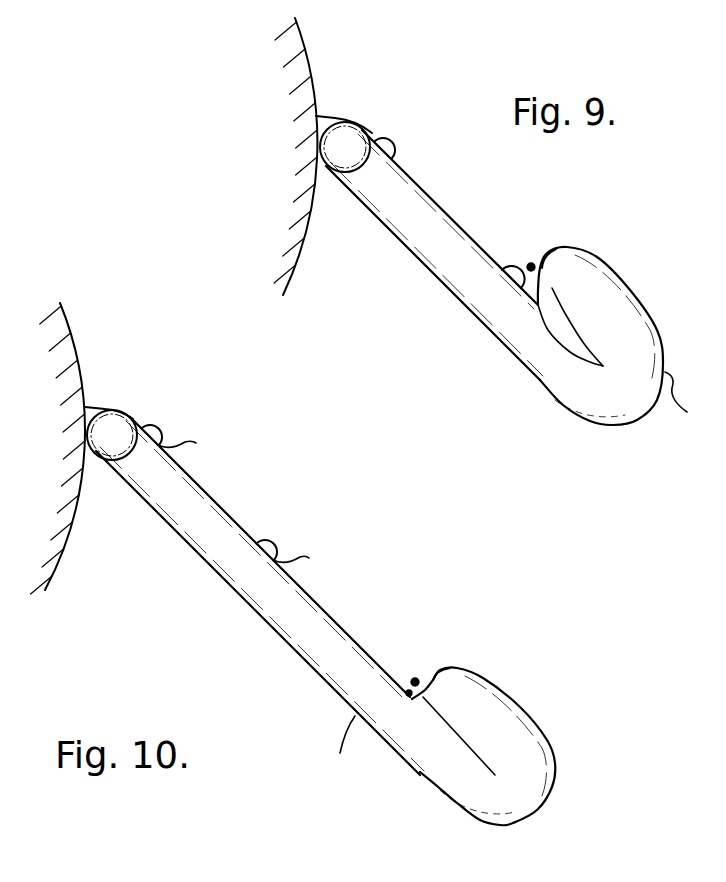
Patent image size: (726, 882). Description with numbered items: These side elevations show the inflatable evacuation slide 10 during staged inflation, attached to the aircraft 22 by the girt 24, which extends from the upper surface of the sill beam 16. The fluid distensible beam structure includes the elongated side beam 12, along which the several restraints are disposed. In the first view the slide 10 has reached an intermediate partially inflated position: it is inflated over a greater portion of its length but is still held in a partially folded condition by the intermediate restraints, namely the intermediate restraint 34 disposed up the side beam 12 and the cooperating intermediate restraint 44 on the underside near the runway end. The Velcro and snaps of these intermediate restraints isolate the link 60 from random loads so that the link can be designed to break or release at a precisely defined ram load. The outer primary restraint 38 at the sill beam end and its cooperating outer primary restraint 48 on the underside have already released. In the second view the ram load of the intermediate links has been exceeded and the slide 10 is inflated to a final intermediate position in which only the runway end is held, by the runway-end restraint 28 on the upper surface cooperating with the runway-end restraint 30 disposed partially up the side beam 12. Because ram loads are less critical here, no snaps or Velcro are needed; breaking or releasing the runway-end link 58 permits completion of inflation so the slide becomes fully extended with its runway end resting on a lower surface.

In FIG. 9, the inflatable evacuation slide 10 is at (460, 323).
In FIG. 10, the inflatable evacuation slide 10 is at (256, 639).
In FIG. 9, the side beam 12 is at (582, 404).
In FIG. 10, the side beam 12 is at (178, 538).
In FIG. 9, the sill beam 16 is at (357, 160).
In FIG. 10, the sill beam 16 is at (124, 448).
In FIG. 9, the aircraft 22 is at (313, 49).
In FIG. 10, the aircraft 22 is at (75, 337).
In FIG. 9, the girt 24 is at (325, 117).
In FIG. 10, the girt 24 is at (96, 410).
In FIG. 10, the runway-end restraint 28 is at (436, 668).
In FIG. 10, the runway-end restraint 30 is at (408, 690).
In FIG. 9, the intermediate restraint 34 is at (512, 266).
In FIG. 10, the intermediate restraint 34 is at (270, 542).
In FIG. 9, the outer primary restraint 38 is at (390, 137).
In FIG. 10, the outer primary restraint 38 is at (155, 432).
In FIG. 9, the intermediate restraint 44 is at (543, 253).
In FIG. 10, the outer primary restraint 48 is at (352, 709).
In FIG. 10, the runway-end link 58 is at (415, 678).
In FIG. 9, the intermediate restraint link 60 is at (531, 263).